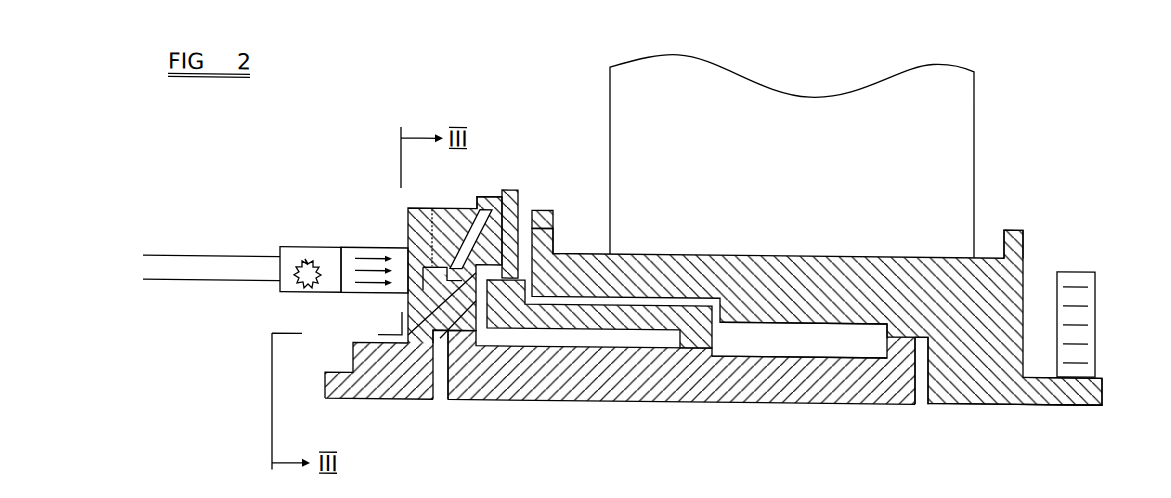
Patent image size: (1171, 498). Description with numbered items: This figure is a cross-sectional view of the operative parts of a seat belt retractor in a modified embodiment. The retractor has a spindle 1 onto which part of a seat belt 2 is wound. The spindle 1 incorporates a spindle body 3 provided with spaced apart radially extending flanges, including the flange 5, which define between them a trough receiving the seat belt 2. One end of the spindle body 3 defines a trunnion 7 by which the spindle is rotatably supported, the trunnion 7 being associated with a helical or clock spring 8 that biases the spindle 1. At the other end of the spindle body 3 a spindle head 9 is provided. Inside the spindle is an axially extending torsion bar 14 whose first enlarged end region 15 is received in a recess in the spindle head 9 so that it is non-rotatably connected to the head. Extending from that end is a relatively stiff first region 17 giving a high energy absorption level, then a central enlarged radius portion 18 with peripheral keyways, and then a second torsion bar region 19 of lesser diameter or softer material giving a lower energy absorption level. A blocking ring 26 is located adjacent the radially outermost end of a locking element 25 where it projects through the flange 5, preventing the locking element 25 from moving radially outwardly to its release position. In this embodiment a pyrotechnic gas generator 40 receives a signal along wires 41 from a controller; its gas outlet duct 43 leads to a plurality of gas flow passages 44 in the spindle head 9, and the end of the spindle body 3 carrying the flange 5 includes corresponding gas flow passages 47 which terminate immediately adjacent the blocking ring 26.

The spindle 1 is at (1027, 192).
The seat belt 2 is at (932, 108).
The spindle body 3 is at (1023, 252).
The flange 5 is at (553, 198).
The trunnion 7 is at (1063, 392).
The clock spring 8 is at (1085, 308).
The spindle head 9 is at (391, 396).
The torsion bar 14 is at (660, 408).
The first enlarged end region 15 is at (462, 396).
The first region of the torsion bar 17 is at (587, 395).
The enlarged radius portion 18 is at (703, 390).
The second torsion bar region 19 is at (774, 390).
The locking element 25 is at (540, 252).
The blocking ring 26 is at (505, 190).
The pyrotechnic gas generator 40 is at (303, 250).
The wires 41 is at (192, 260).
The gas outlet duct 43 is at (360, 250).
The gas flow passages 44 is at (423, 294).
The gas flow passages 47 is at (463, 209).